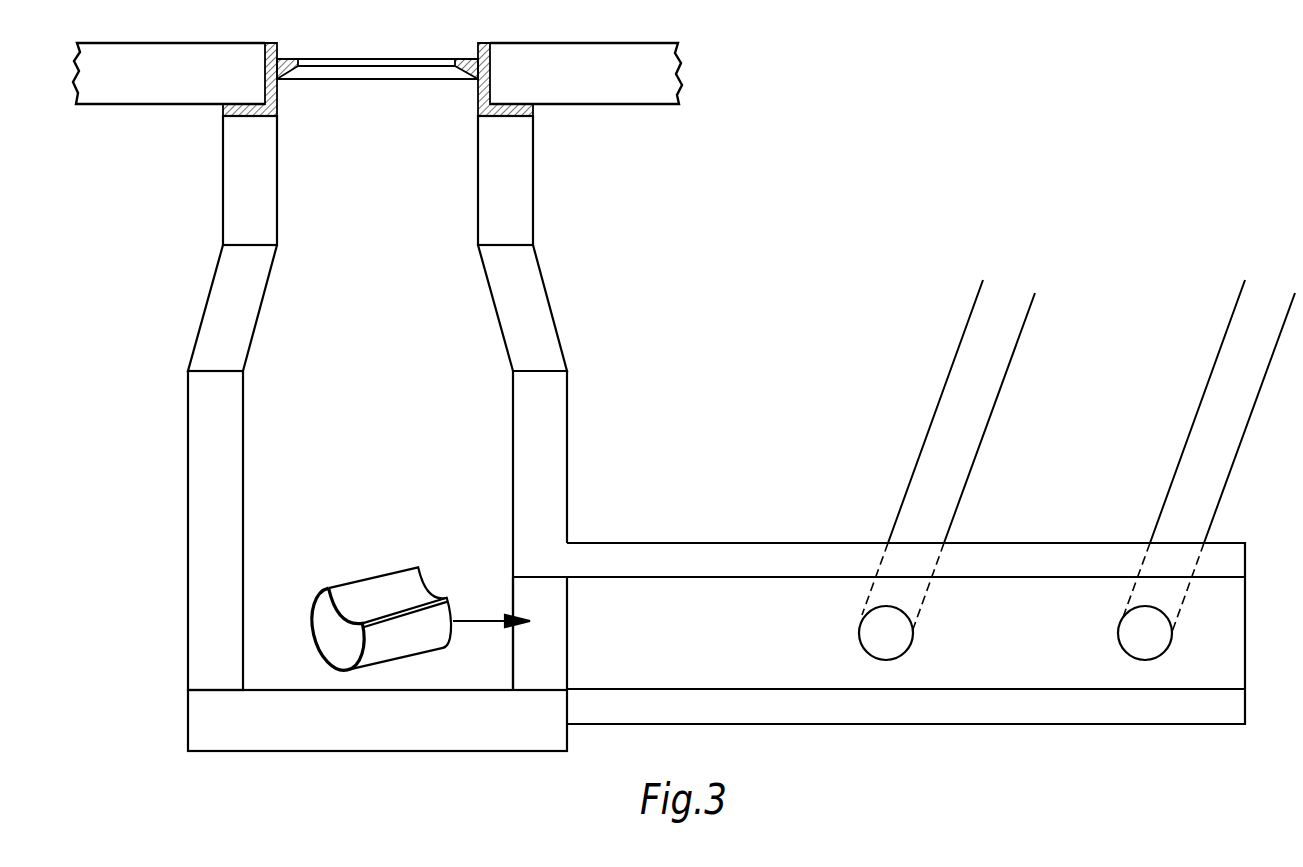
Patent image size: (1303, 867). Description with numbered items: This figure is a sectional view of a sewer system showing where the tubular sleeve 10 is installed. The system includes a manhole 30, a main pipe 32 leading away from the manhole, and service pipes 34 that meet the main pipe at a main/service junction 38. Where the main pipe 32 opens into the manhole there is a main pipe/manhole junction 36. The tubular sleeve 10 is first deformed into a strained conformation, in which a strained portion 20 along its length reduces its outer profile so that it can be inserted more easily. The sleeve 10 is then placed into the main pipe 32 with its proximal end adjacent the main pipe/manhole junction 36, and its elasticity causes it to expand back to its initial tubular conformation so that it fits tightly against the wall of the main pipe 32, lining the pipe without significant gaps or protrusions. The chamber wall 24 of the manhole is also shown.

The tubular sleeve 10 is at (396, 602).
The strained portion 20 is at (388, 619).
The chamber wall 24 is at (243, 493).
The manhole 30 is at (552, 307).
The main pipe 32 is at (1019, 543).
The service pipes 34 is at (917, 468).
The main pipe/manhole junction 36 is at (513, 577).
The main/service junction 38 is at (859, 629).